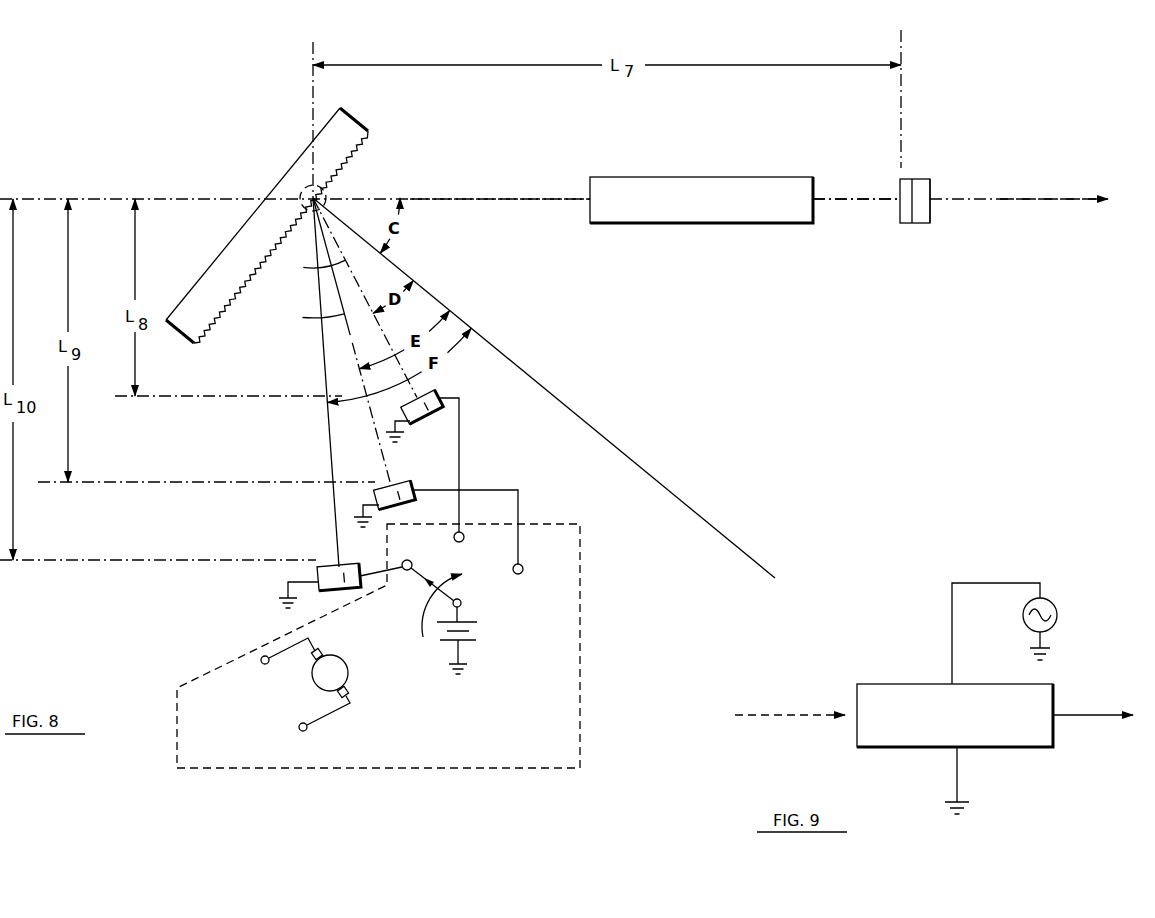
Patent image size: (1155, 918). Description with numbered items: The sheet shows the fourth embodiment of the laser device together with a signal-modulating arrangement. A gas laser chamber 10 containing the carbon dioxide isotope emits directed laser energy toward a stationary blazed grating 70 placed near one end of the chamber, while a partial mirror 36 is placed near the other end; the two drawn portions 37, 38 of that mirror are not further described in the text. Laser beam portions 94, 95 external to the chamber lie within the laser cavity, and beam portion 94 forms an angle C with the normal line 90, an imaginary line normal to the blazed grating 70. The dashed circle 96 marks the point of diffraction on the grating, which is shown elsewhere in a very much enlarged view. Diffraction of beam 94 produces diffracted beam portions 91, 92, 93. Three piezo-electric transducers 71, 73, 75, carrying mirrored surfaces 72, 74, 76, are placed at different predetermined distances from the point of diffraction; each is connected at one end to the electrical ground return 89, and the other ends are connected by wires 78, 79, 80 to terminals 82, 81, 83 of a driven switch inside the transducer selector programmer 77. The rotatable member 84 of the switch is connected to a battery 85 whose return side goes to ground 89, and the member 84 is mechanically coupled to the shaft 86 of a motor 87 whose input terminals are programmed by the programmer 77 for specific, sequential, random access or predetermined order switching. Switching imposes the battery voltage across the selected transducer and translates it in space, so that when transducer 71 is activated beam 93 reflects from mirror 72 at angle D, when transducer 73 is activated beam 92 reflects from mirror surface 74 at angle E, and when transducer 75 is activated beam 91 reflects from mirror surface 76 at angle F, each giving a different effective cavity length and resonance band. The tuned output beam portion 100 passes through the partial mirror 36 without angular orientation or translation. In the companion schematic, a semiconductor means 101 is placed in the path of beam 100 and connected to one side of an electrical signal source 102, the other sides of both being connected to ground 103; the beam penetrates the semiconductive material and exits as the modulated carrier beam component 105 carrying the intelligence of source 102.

In FIG. 8, the laser chamber 10 is at (670, 182).
In FIG. 8, the partial mirror 36 is at (922, 199).
In FIG. 8, the beam splitter element 37 is at (903, 208).
In FIG. 8, the beam splitter element 38 is at (920, 208).
In FIG. 8, the blazed grating 70 is at (340, 137).
In FIG. 8, the piezo-electric transducer 71 is at (422, 415).
In FIG. 8, the mirrored surface 72 is at (436, 393).
In FIG. 8, the piezo-electric transducer 73 is at (408, 501).
In FIG. 8, the mirrored surface 74 is at (398, 482).
In FIG. 8, the piezo-electric transducer 75 is at (345, 581).
In FIG. 8, the mirrored surface 76 is at (352, 564).
In FIG. 8, the transducer selector programmer 77 is at (560, 652).
In FIG. 8, the wire 78 is at (459, 447).
In FIG. 8, the wire 79 is at (519, 508).
In FIG. 8, the wire 80 is at (373, 578).
In FIG. 8, the terminal 81 is at (522, 572).
In FIG. 8, the terminal 82 is at (465, 540).
In FIG. 8, the terminal 83 is at (411, 561).
In FIG. 8, the rotatable member 84 is at (461, 604).
In FIG. 8, the battery 85 is at (479, 629).
In FIG. 8, the shaft 86 is at (409, 633).
In FIG. 8, the motor 87 is at (333, 656).
In FIG. 8, the electrical ground return 89 is at (388, 433).
In FIG. 8, the normal line 90 is at (713, 531).
In FIG. 8, the diffracted laser beam portion 91 is at (329, 428).
In FIG. 8, the diffracted laser beam portion 92 is at (303, 318).
In FIG. 8, the diffracted laser beam portion 93 is at (304, 268).
In FIG. 8, the laser beam portion 94 is at (457, 197).
In FIG. 8, the laser beam portion 95 is at (836, 197).
In FIG. 8, the enlarged view 96 is at (326, 189).
In FIG. 8, the directed energy beam portion 100 is at (1080, 198).
In FIG. 9, the directed energy beam portion 100 is at (770, 715).
In FIG. 9, the semiconductor means 101 is at (875, 733).
In FIG. 9, the electrical signal source 102 is at (1046, 603).
In FIG. 9, the ground 103 is at (1050, 648).
In FIG. 9, the directed laser beam component 105 is at (1122, 712).